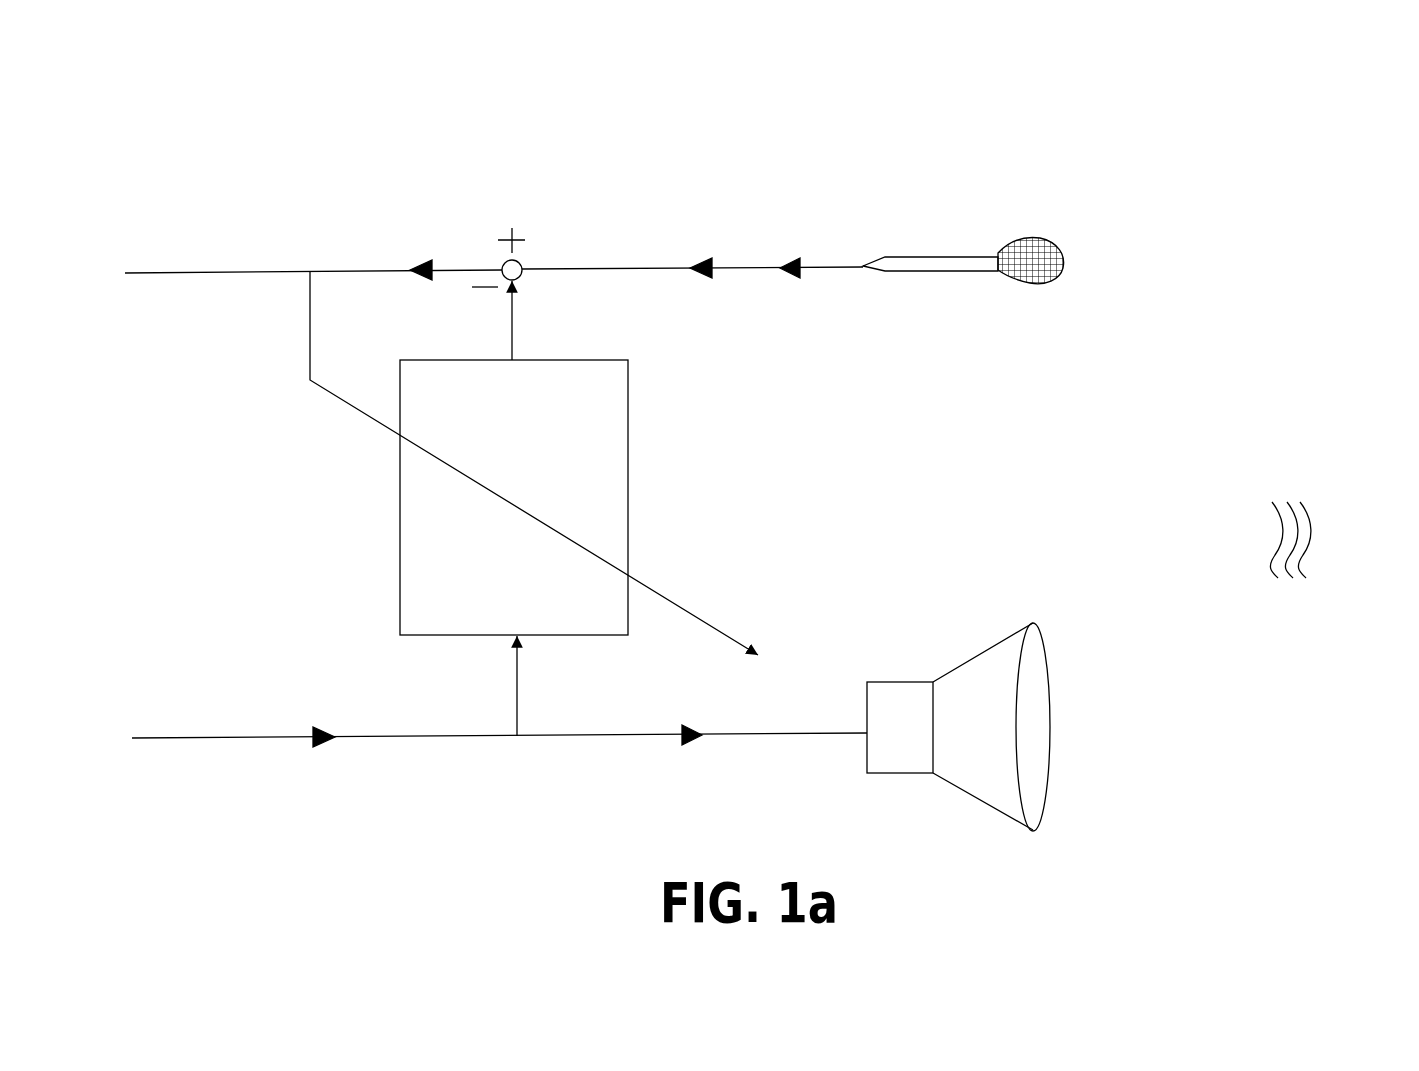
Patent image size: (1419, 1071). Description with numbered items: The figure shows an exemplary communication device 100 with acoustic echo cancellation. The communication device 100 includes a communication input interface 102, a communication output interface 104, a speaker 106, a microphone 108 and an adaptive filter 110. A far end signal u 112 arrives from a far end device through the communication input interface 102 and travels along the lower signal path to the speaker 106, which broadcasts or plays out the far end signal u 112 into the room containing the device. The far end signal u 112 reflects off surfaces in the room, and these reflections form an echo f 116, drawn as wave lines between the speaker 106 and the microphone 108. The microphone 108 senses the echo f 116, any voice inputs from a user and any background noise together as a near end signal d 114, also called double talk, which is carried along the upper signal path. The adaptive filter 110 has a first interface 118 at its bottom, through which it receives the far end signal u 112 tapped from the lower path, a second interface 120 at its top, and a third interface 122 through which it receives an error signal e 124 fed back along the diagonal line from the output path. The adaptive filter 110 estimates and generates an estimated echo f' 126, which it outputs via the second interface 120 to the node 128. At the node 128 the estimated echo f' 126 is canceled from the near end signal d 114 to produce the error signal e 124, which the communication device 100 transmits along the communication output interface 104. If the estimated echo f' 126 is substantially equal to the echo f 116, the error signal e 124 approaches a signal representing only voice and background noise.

The communication device 100 is at (815, 110).
The communication input interface 102 is at (160, 738).
The communication output interface 104 is at (200, 272).
The speaker 106 is at (1053, 797).
The microphone 108 is at (1040, 240).
The adaptive filter 110 is at (629, 443).
The far end signal u 112 is at (1317, 700).
The near end signal d 114 is at (1352, 228).
The echo f 116 is at (1270, 555).
The first interface 118 is at (512, 640).
The second interface 120 is at (464, 372).
The third interface 122 is at (352, 407).
The error signal e 124 is at (100, 218).
The estimated echo f' 126 is at (556, 318).
The node 128 is at (522, 263).